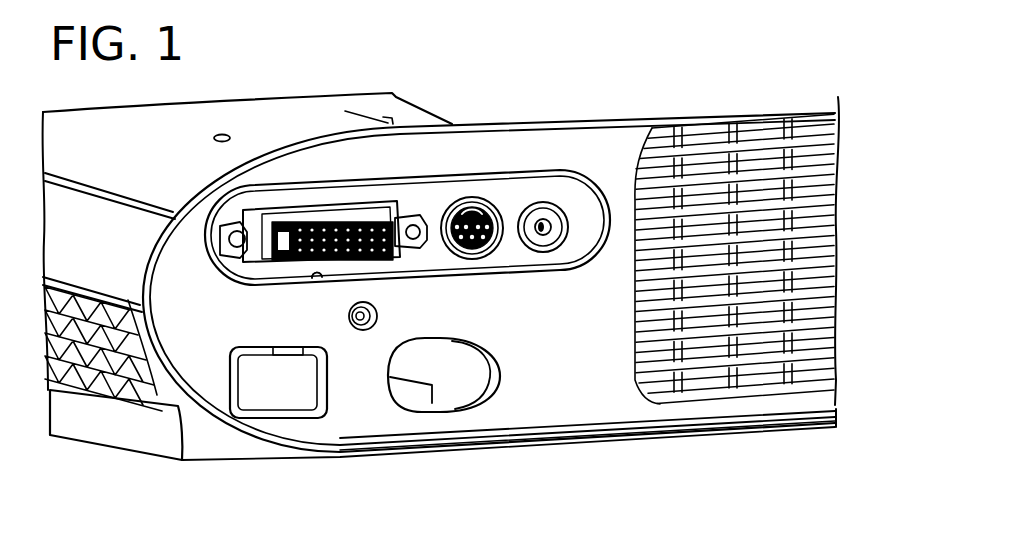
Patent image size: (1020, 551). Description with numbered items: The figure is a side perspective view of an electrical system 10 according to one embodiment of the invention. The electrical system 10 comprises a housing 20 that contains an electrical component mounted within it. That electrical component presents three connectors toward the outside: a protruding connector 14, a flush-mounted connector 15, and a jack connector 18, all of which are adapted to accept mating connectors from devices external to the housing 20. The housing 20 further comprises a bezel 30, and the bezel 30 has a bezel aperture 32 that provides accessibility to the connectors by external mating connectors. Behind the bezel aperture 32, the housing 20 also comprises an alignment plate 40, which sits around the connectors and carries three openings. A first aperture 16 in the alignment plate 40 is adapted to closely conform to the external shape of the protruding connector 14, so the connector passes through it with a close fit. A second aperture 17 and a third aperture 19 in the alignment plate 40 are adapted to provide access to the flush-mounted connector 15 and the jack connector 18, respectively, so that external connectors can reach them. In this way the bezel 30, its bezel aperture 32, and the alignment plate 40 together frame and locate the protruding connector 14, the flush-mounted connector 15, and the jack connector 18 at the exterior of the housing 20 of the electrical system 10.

The electrical system 10 is at (575, 66).
The protruding connector 14 is at (258, 250).
The flush-mounted connector 15 is at (475, 237).
The first aperture 16 is at (283, 270).
The second aperture 17 is at (500, 253).
The jack connector 18 is at (548, 223).
The third aperture 19 is at (570, 236).
The housing 20 is at (125, 425).
The bezel 30 is at (528, 410).
The bezel aperture 32 is at (320, 280).
The alignment plate 40 is at (504, 187).